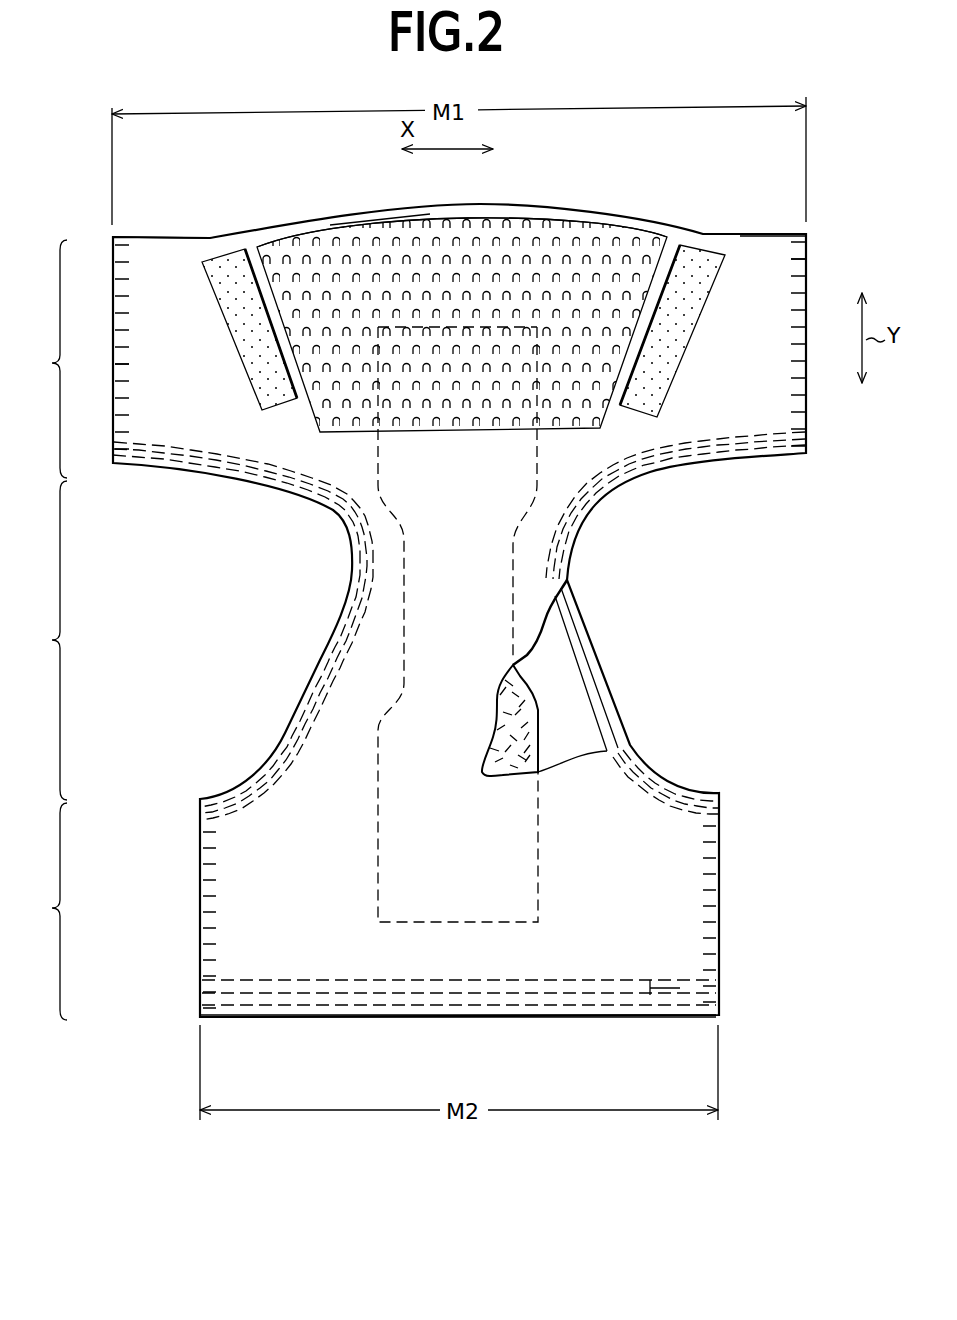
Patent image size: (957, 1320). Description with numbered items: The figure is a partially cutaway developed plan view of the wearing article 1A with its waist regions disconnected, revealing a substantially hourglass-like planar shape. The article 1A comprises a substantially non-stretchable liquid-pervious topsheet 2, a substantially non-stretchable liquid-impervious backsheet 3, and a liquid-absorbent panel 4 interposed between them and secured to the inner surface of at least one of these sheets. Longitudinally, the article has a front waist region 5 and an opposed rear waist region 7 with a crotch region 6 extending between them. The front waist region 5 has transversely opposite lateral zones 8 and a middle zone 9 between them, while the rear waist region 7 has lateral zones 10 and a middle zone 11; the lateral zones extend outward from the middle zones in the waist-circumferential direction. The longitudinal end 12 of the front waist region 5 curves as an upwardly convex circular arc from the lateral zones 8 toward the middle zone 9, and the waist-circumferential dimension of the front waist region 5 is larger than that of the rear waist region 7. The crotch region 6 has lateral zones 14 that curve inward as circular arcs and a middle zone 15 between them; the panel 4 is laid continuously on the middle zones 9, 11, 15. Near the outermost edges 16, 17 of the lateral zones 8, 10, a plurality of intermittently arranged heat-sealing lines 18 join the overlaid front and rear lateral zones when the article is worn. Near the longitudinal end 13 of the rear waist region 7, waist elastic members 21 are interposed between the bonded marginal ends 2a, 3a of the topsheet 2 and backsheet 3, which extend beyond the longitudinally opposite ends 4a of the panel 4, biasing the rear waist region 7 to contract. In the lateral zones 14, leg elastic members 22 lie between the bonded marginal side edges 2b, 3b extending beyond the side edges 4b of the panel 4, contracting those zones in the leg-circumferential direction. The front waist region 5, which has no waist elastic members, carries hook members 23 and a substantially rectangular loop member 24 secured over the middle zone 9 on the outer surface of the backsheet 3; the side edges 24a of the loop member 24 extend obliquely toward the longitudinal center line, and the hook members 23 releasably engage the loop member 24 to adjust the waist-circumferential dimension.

The wearing article 1A is at (620, 197).
The topsheet 2 is at (540, 660).
The marginal end of topsheet 2a is at (237, 247).
The marginal side edge of topsheet 2b is at (375, 525).
The backsheet 3 is at (560, 457).
The marginal end of backsheet 3a is at (750, 247).
The marginal side edge of backsheet 3b is at (373, 627).
The liquid-absorbent panel 4 is at (540, 717).
The longitudinally opposite ends of panel 4a is at (433, 218).
The transversely opposite side edges of panel 4b is at (405, 645).
The front waist region 5 is at (48, 359).
The crotch region 6 is at (48, 640).
The rear waist region 7 is at (48, 911).
The lateral zones of front waist region 8 is at (192, 320).
The middle zone of front waist region 9 is at (520, 233).
The lateral zones of rear waist region 10 is at (277, 947).
The middle zone of rear waist region 11 is at (470, 947).
The longitudinal end of front waist region 12 is at (482, 205).
The longitudinal end of rear waist region 13 is at (582, 1018).
The lateral zones of crotch region 14 is at (390, 583).
The middle zone of crotch region 15 is at (463, 542).
The outermost edge of front lateral zone 16 is at (115, 300).
The outermost edge of rear lateral zone 17 is at (205, 896).
The heat-sealing lines 18 is at (125, 354).
The waist elastic members 21 is at (617, 1003).
The leg elastic members 22 is at (293, 742).
The hook members 23 is at (223, 277).
The loop member 24 is at (380, 240).
The side edges of loop member 24a is at (248, 243).